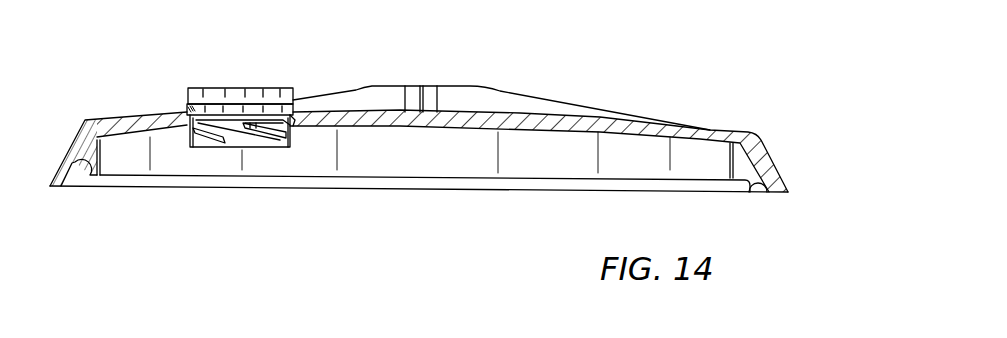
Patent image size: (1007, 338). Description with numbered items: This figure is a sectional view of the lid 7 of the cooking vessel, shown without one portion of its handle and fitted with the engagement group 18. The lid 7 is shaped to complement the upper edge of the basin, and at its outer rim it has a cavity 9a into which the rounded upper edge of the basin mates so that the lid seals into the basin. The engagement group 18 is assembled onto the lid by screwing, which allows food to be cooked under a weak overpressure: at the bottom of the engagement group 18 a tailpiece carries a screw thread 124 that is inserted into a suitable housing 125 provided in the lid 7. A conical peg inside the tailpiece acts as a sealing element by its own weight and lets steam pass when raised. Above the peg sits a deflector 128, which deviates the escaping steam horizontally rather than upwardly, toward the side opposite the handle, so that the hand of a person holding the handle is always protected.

The lid 7 is at (584, 90).
The cavity 9a is at (757, 175).
The engagement group 18 is at (305, 78).
The screw thread 124 is at (248, 135).
The housing 125 is at (188, 145).
The deflector 128 is at (212, 97).